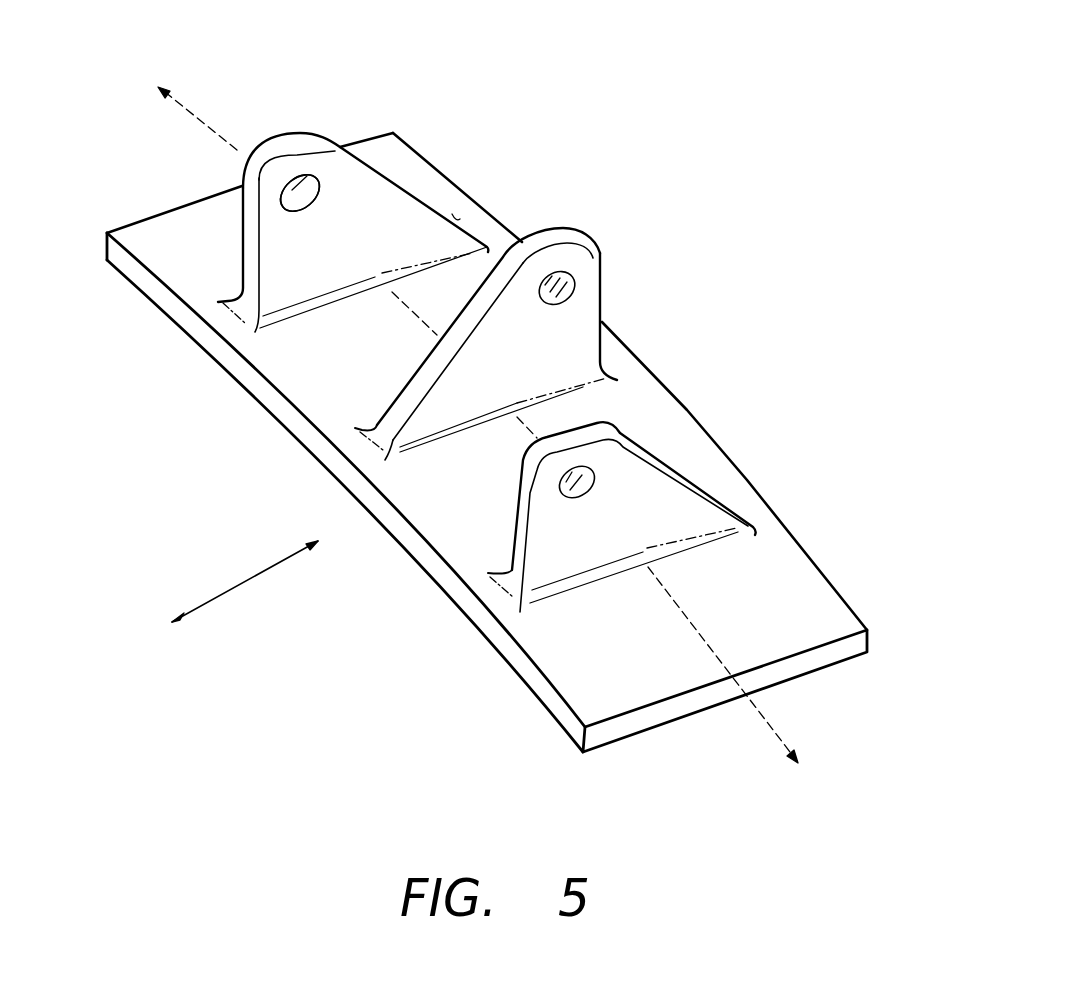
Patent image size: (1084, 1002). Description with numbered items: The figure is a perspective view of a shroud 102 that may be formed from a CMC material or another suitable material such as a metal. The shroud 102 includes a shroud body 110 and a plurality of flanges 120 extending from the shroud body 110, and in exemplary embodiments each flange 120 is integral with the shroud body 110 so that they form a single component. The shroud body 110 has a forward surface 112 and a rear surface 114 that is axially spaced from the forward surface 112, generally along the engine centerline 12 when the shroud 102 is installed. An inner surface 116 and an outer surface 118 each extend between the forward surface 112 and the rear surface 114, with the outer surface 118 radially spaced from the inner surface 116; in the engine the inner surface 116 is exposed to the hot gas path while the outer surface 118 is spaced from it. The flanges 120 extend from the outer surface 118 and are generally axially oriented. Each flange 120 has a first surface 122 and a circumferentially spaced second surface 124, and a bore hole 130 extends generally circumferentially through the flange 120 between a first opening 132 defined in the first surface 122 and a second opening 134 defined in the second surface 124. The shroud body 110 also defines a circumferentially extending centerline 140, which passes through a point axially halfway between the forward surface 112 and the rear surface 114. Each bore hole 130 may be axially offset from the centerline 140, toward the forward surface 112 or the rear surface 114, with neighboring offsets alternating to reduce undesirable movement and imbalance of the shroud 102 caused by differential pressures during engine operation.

The shroud 102 is at (583, 88).
The shroud body 110 is at (177, 233).
The forward surface 112 is at (270, 392).
The rear surface 114 is at (872, 640).
The inner surface 116 is at (733, 707).
The outer surface 118 is at (755, 583).
The flange 120 is at (347, 140).
The first surface 122 is at (583, 260).
The second surface 124 is at (547, 233).
The bore hole 130 is at (318, 178).
The first opening 132 is at (292, 218).
The second opening 134 is at (277, 196).
The centerline 12 is at (238, 583).
The circumferentially extending centerline 140 is at (767, 720).